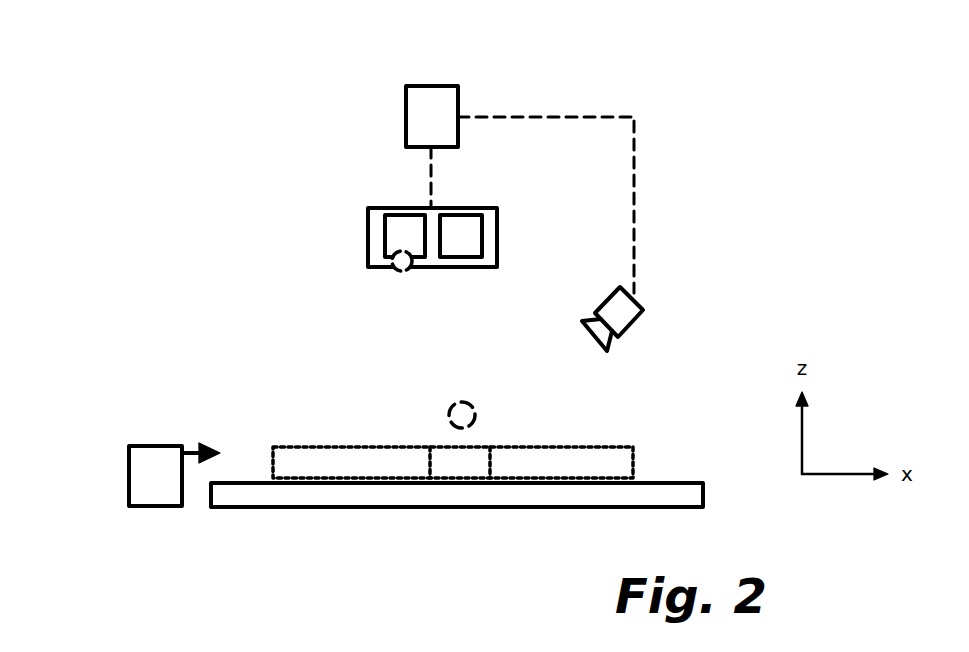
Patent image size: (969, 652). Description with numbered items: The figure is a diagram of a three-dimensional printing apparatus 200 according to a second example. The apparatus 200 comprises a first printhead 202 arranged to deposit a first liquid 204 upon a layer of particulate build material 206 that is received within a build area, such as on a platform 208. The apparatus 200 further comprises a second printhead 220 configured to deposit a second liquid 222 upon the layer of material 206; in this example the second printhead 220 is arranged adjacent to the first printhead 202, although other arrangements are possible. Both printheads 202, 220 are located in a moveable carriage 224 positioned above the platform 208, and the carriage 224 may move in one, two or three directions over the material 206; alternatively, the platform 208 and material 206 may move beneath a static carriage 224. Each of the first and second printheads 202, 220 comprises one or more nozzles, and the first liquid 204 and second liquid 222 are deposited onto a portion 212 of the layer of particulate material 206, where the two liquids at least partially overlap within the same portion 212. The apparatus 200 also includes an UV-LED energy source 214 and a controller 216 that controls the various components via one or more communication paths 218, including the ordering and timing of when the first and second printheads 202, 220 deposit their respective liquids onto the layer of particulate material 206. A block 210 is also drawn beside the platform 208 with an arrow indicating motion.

The three-dimensional printing apparatus 200 is at (716, 91).
The first printhead 202 is at (483, 225).
The first liquid 204 is at (458, 402).
The layer of particulate build material 206 is at (618, 447).
The platform 208 is at (292, 507).
The actuator 210 is at (128, 487).
The portion 212 is at (483, 449).
The UV-LED energy source 214 is at (650, 311).
The controller 216 is at (418, 85).
The communication paths 218 is at (549, 117).
The second printhead 220 is at (385, 225).
The second liquid 222 is at (413, 273).
The moveable carriage 224 is at (372, 267).